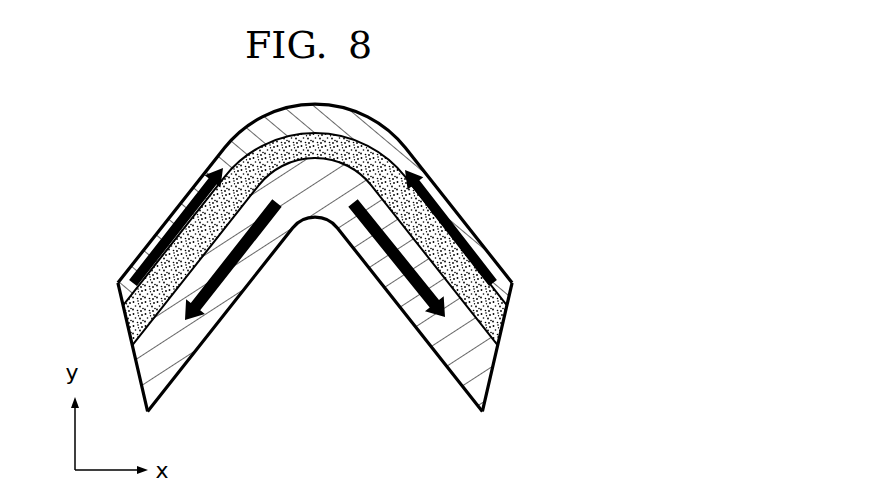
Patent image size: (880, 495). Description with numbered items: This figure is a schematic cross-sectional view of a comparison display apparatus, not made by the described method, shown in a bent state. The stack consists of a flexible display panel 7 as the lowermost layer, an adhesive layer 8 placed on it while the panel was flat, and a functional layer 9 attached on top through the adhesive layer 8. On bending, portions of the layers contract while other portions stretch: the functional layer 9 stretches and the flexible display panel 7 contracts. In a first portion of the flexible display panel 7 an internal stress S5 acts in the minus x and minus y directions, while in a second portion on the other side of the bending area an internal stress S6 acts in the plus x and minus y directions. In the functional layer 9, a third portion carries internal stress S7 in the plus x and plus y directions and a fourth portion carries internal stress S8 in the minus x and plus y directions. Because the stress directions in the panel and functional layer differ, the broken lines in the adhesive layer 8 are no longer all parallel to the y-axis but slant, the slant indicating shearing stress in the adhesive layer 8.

The flexible display panel 7 is at (483, 374).
The adhesive layer 8 is at (496, 322).
The functional layer 9 is at (498, 291).
The internal stress S5 is at (228, 275).
The internal stress S6 is at (403, 287).
The internal stress S7 is at (184, 214).
The internal stress S8 is at (452, 215).